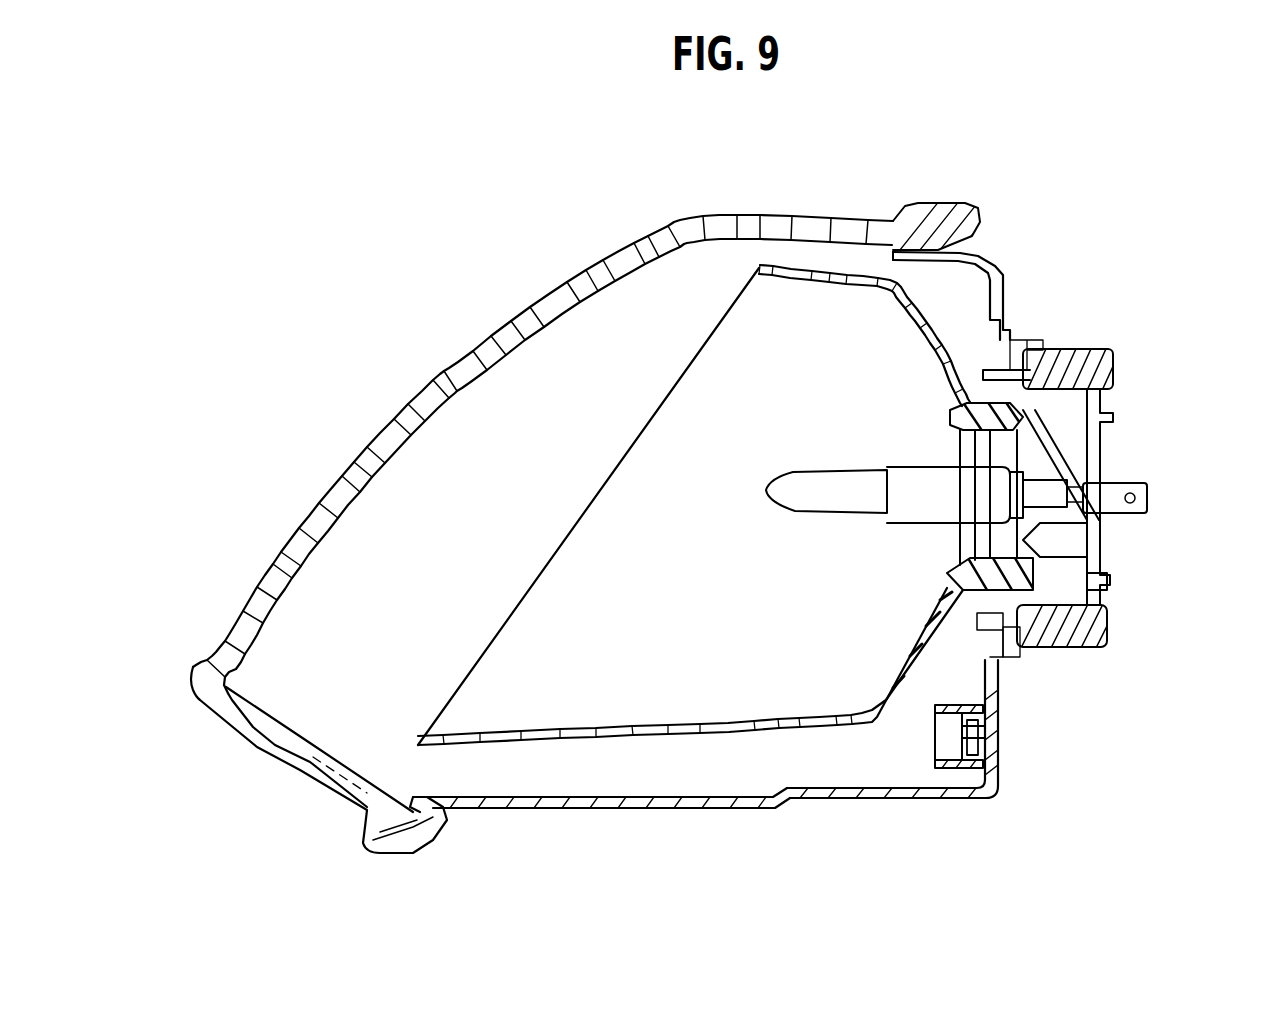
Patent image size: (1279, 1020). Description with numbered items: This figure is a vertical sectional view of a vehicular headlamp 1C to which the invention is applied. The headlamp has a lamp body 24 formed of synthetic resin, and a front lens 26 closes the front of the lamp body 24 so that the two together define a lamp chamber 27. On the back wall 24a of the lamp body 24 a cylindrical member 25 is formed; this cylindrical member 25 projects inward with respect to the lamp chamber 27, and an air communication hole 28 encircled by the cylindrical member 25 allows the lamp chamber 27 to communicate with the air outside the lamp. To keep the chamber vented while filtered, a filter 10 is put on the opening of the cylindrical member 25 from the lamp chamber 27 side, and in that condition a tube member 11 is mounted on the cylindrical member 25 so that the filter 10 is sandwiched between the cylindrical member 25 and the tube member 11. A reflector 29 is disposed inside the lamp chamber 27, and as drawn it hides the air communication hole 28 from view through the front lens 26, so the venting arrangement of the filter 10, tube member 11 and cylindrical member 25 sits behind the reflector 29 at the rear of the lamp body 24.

The vehicular lamp 1C is at (1130, 130).
The filter 10 is at (958, 733).
The tube member 11 is at (930, 800).
The lamp body 24 is at (742, 807).
The back wall 24a is at (987, 705).
The cylindrical member 25 is at (978, 748).
The front lens 26 is at (458, 362).
The lamp chamber 27 is at (527, 462).
The air communication hole 28 is at (963, 731).
The reflector 29 is at (637, 736).